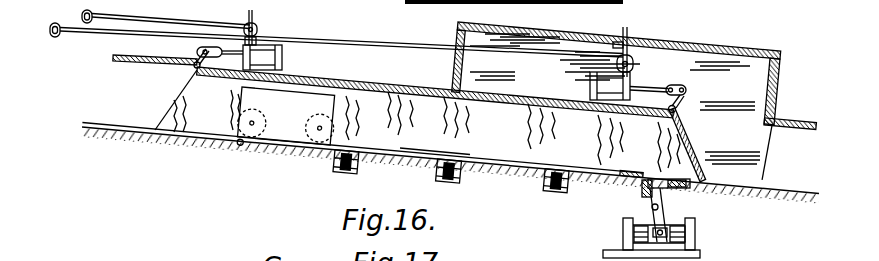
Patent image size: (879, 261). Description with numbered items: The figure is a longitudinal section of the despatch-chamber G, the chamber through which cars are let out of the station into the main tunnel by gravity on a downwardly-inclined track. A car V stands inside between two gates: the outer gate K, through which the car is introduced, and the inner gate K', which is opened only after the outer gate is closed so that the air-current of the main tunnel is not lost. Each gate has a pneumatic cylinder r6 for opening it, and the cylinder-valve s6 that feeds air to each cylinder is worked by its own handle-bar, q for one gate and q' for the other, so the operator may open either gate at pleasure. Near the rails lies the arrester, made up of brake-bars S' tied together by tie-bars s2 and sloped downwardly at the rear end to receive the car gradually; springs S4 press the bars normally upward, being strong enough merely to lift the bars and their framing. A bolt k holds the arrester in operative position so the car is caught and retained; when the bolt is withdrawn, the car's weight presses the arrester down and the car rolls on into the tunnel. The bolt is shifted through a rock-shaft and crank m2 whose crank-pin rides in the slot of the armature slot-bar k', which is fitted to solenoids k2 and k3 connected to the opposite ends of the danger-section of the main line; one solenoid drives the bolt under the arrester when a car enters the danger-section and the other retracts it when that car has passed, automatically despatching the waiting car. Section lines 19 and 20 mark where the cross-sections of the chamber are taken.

The handle-bar q is at (166, 14).
The handle-bar q' is at (336, 46).
The gate K is at (153, 74).
The despatch-chamber G is at (417, 121).
The car V is at (287, 116).
The cylinder-valve s6 is at (258, 33).
The pneumatic cylinder r6 is at (283, 56).
The section line 19 19 is at (364, 170).
The tie-bar s2 is at (441, 153).
The brake-bar S' is at (450, 162).
The spring S4 is at (533, 185).
The gate K' is at (697, 133).
The section line 20 20 is at (752, 90).
The crank m2 is at (643, 186).
The bolt k is at (667, 215).
The solenoid k2 is at (686, 220).
The slot-bar k' is at (665, 238).
The solenoid k3 is at (633, 218).